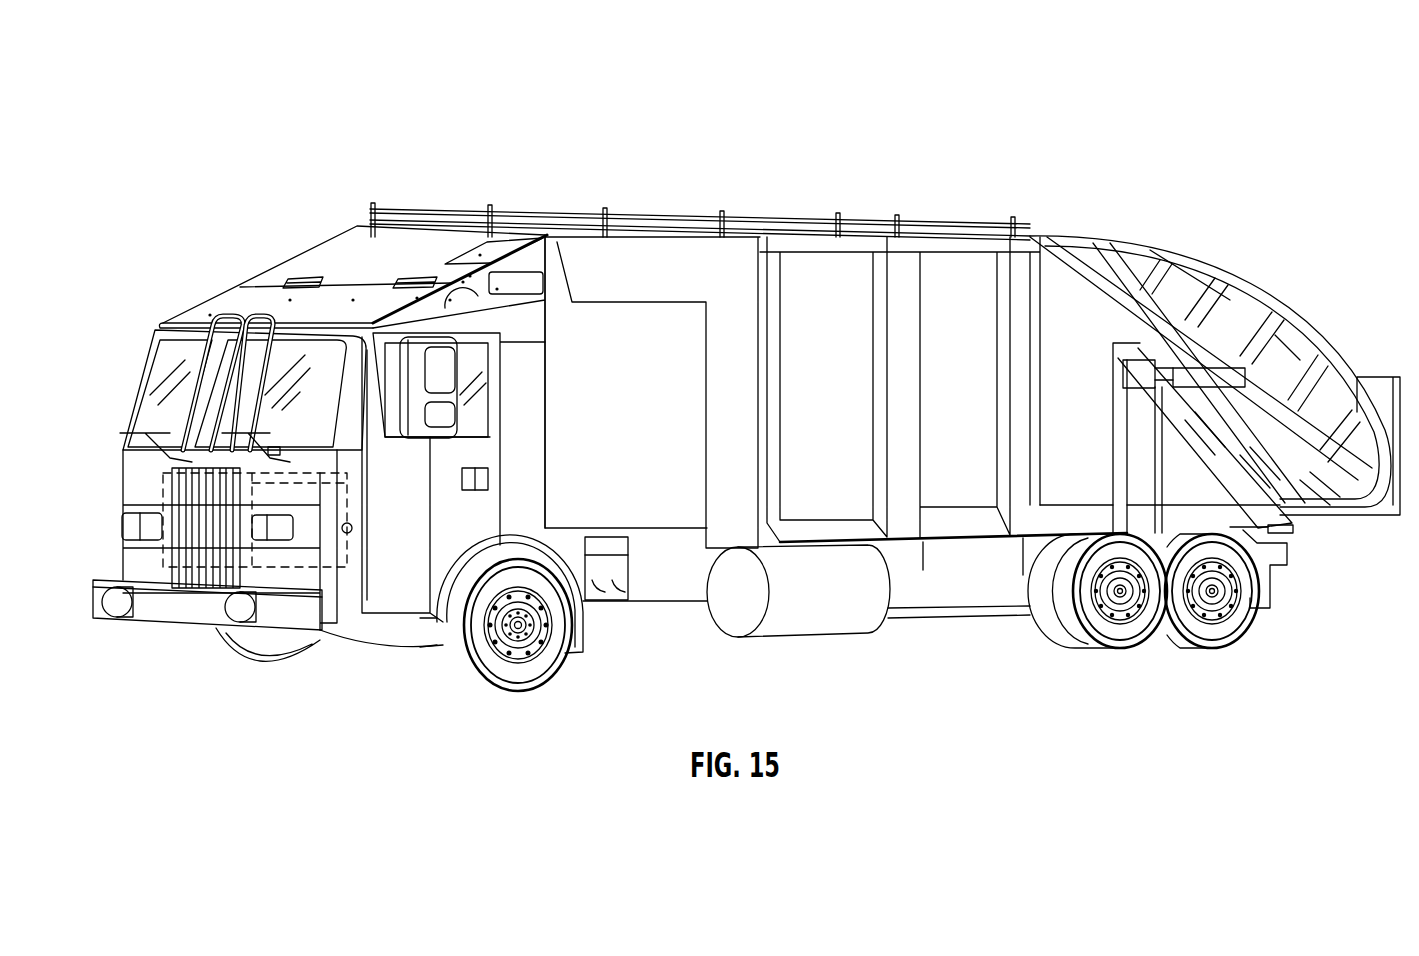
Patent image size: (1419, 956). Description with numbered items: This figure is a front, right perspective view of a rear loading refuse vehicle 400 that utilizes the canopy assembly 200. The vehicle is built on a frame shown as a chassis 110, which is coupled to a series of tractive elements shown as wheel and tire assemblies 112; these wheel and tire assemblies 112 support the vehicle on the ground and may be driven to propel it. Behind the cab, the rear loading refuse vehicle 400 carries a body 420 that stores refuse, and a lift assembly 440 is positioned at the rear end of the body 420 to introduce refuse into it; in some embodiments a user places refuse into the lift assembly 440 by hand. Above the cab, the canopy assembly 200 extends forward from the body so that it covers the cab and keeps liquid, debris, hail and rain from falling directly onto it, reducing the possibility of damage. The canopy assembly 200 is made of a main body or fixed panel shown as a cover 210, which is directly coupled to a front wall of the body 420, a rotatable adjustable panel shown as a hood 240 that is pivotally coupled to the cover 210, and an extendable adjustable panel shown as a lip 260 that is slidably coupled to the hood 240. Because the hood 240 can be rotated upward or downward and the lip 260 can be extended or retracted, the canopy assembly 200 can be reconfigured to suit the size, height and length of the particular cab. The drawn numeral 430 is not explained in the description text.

The chassis 110 is at (816, 671).
The wheel and tire assemblies 112 is at (489, 702).
The canopy assembly 200 is at (400, 399).
The cover 210 is at (305, 258).
The hood 240 is at (228, 292).
The lip 260 is at (175, 322).
The rear loading refuse vehicle 400 is at (891, 351).
The body 420 is at (840, 168).
The front axle wheel 430 is at (221, 660).
The lift assembly 440 is at (1322, 310).